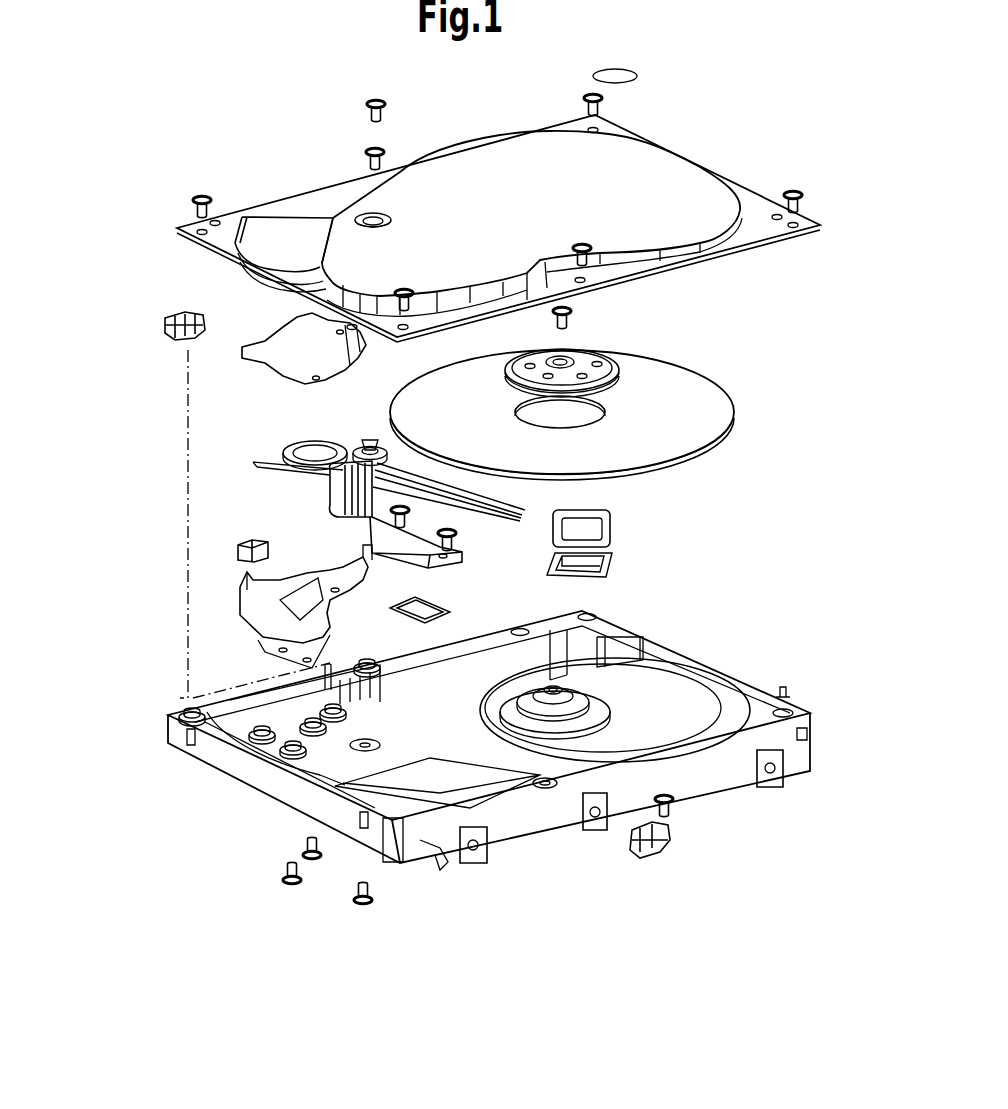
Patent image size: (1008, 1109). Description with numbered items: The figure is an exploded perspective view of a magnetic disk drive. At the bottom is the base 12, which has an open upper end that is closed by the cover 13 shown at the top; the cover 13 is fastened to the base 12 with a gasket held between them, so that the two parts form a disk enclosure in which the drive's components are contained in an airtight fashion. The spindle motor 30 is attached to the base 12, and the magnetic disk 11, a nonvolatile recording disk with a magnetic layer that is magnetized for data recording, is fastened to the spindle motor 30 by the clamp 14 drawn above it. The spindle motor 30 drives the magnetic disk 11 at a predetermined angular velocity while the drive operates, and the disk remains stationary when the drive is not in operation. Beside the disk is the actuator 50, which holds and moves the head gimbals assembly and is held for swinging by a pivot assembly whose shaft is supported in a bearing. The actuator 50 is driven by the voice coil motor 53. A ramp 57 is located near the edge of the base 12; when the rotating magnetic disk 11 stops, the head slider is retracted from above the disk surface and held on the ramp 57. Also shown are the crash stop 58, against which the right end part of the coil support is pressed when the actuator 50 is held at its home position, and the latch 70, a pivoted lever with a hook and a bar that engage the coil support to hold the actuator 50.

The magnetic disk 11 is at (733, 415).
The base 12 is at (630, 618).
The cover 13 is at (687, 168).
The clamp 14 is at (595, 345).
The spindle motor 30 is at (733, 702).
The actuator 50 is at (372, 445).
The voice coil motor 53 is at (315, 328).
The ramp 57 is at (668, 823).
The crash stop 58 is at (243, 538).
The latch 70 is at (165, 320).